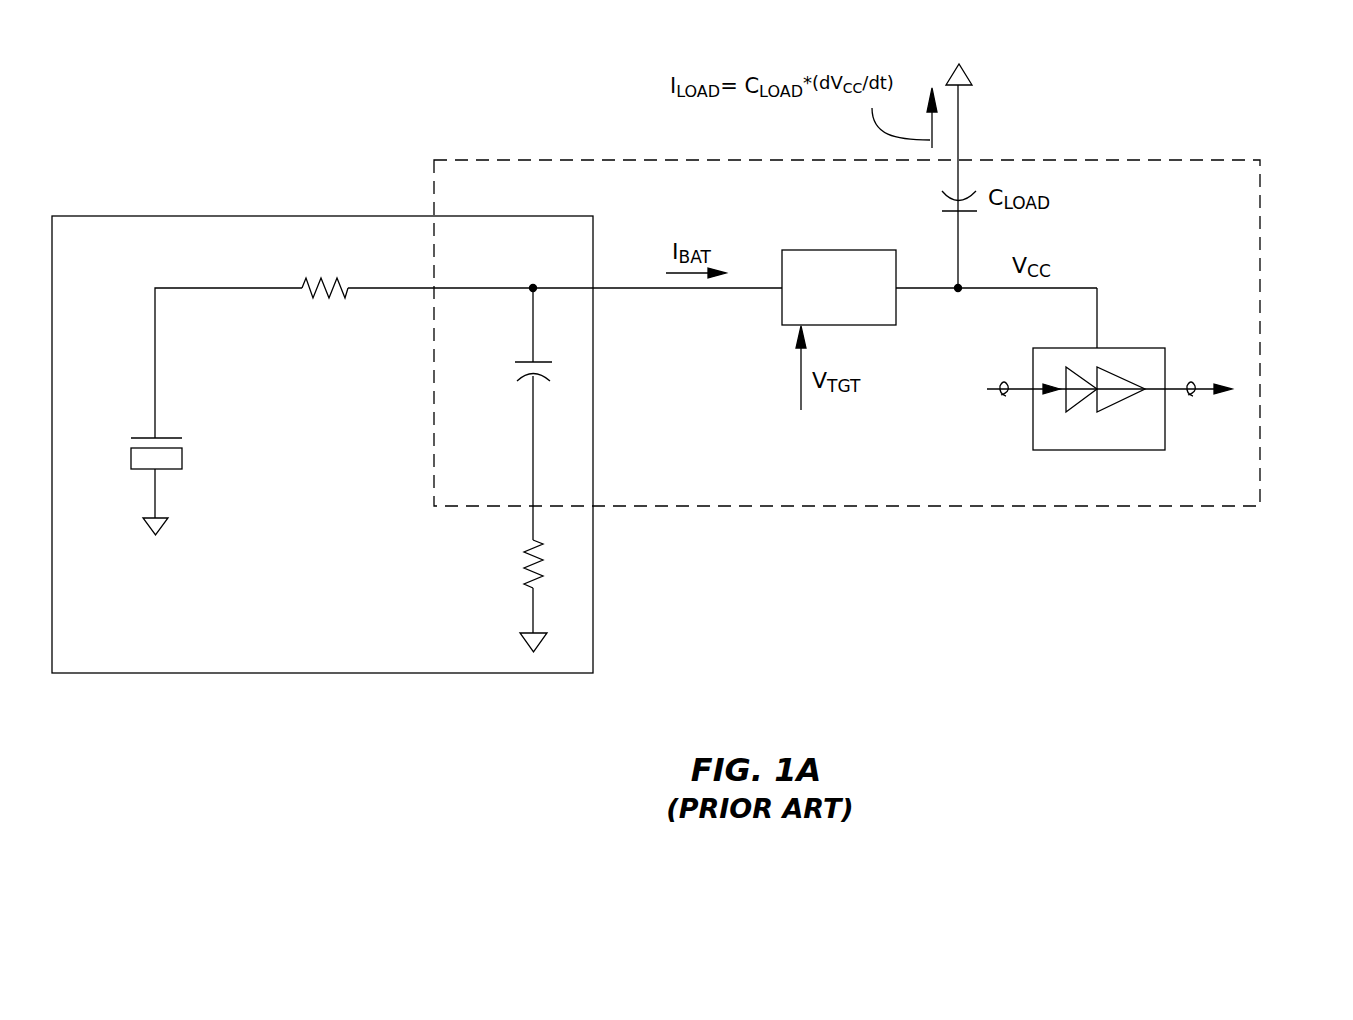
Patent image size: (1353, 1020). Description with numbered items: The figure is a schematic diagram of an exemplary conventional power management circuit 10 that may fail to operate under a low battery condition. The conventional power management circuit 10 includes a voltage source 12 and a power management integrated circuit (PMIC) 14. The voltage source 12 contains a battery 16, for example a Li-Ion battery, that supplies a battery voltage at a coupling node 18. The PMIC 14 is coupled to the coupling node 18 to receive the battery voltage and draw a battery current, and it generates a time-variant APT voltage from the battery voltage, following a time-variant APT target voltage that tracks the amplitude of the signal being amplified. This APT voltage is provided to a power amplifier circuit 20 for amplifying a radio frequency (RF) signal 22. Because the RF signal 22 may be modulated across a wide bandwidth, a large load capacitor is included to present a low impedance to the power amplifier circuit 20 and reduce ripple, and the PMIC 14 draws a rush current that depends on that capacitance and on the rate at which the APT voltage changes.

The conventional power management circuit 10 is at (1313, 133).
The voltage source 12 is at (417, 444).
The power management integrated circuit (PMIC) 14 is at (839, 287).
The battery 16 is at (184, 460).
The coupling node 18 is at (536, 292).
The power amplifier circuit 20 is at (1127, 450).
The radio frequency (RF) signal 22 is at (1002, 396).